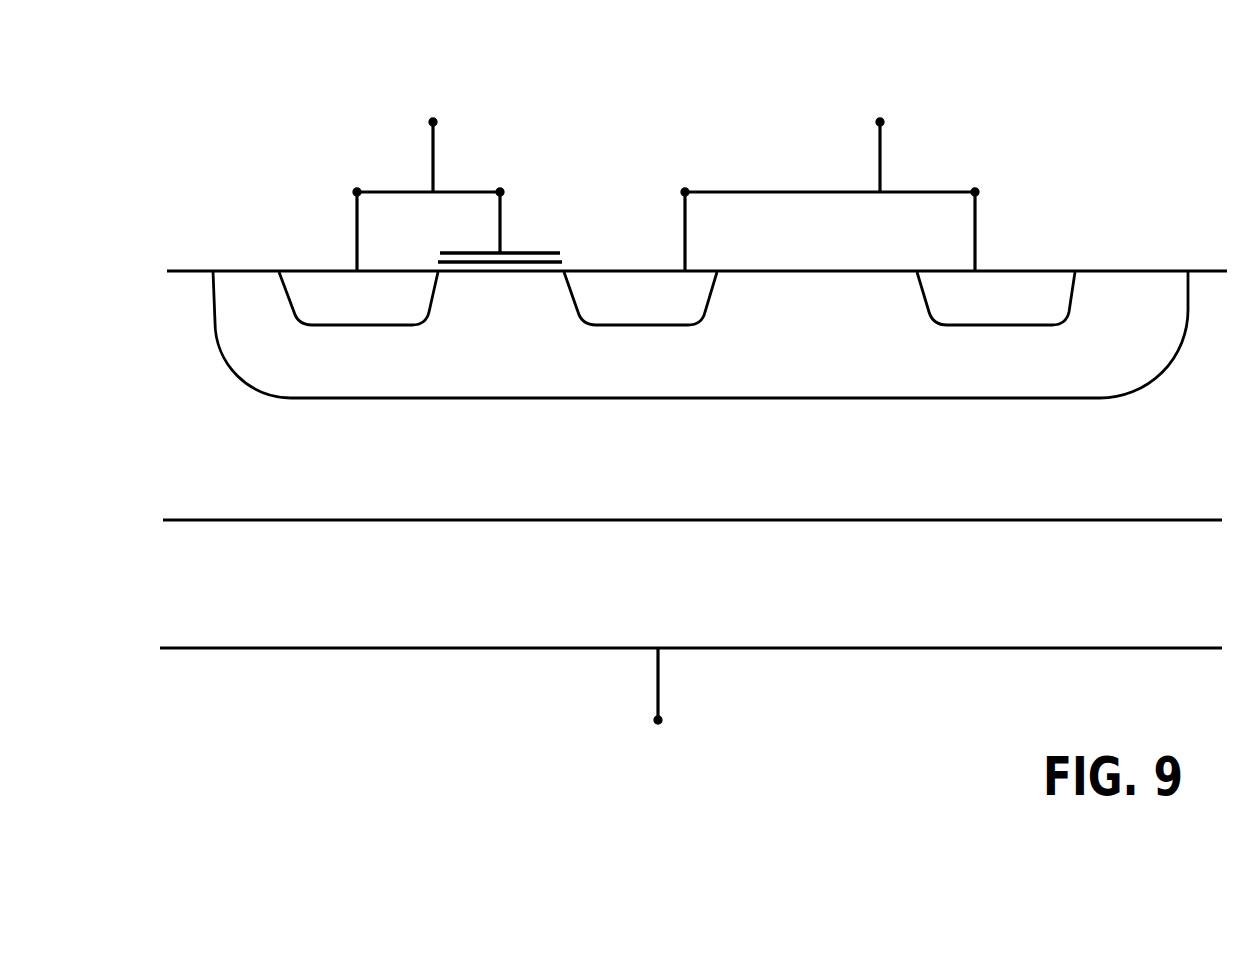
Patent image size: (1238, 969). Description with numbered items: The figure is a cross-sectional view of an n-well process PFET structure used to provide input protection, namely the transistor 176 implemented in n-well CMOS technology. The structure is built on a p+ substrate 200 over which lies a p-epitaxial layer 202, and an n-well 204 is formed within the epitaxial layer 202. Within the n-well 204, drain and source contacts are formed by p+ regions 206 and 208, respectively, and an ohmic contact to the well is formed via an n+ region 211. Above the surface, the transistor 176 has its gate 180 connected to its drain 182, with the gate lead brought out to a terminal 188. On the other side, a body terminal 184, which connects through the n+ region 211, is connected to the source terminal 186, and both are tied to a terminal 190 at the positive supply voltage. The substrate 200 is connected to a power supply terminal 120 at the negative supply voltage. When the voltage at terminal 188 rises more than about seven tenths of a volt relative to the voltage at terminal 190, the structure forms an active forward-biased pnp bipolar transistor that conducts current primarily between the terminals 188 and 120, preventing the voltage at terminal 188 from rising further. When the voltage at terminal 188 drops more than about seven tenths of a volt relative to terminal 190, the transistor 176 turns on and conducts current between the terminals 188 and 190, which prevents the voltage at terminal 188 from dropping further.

The transistor 176 is at (340, 90).
The drain 182 is at (357, 192).
The gate 180 is at (500, 192).
The terminal 188 is at (435, 122).
The source terminal 186 is at (685, 192).
The terminal 190 is at (880, 122).
The body terminal 184 is at (975, 192).
The p+ region 206 is at (368, 315).
The p+ region 208 is at (677, 315).
The n+ region 211 is at (1038, 313).
The n-well 204 is at (1108, 383).
The p-epitaxial layer 202 is at (268, 484).
The p+ substrate 200 is at (267, 615).
The power supply terminal 120 is at (658, 720).